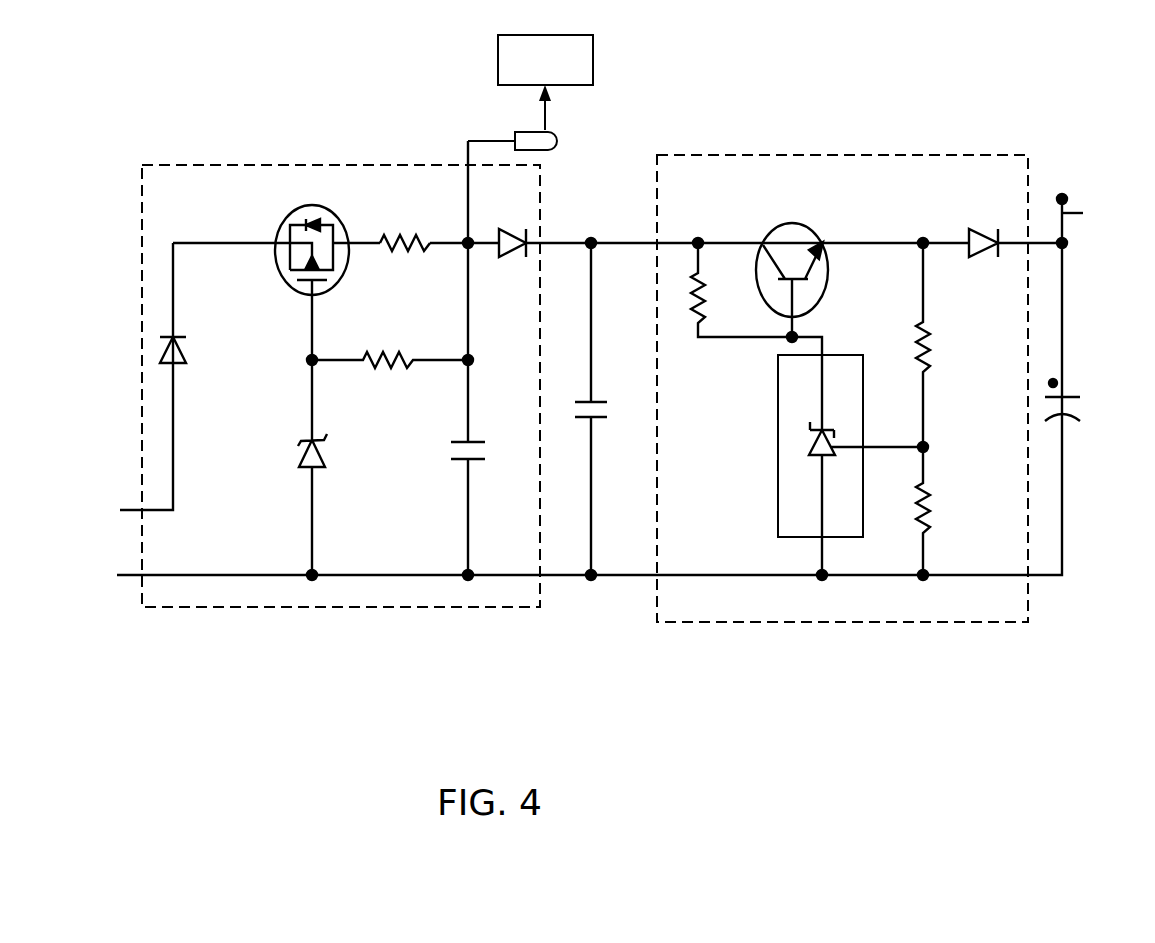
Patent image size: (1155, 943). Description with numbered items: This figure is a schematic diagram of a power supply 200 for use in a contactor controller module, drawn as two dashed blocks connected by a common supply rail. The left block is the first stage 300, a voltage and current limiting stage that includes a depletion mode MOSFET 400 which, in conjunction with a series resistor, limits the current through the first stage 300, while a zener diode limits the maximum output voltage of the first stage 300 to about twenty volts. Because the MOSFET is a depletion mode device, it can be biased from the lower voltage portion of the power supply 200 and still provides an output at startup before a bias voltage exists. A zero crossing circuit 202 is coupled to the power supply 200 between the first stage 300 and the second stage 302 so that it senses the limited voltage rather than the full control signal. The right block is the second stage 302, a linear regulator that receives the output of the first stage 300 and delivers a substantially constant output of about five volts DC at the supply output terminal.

The power supply 200 is at (1004, 108).
The zero crossing circuit 202 is at (565, 72).
The first stage 300 is at (358, 608).
The second stage 302 is at (865, 623).
The depletion mode MOSFET 400 is at (343, 222).